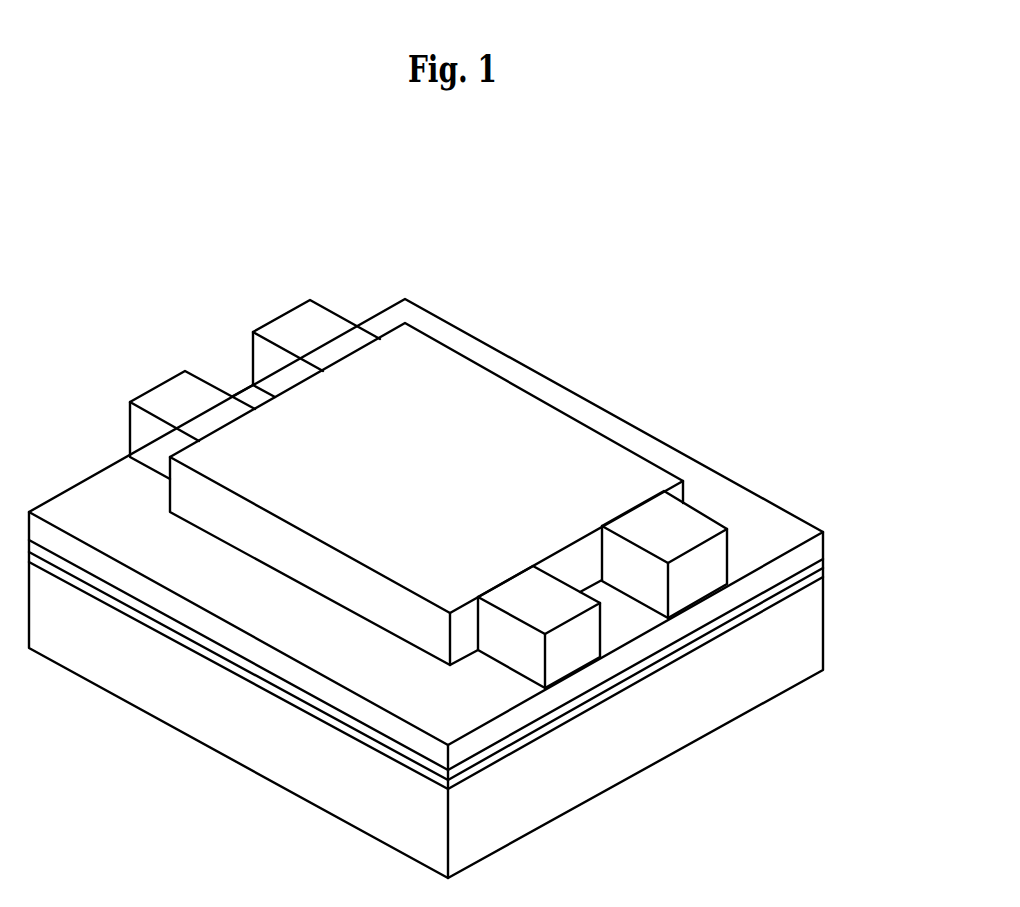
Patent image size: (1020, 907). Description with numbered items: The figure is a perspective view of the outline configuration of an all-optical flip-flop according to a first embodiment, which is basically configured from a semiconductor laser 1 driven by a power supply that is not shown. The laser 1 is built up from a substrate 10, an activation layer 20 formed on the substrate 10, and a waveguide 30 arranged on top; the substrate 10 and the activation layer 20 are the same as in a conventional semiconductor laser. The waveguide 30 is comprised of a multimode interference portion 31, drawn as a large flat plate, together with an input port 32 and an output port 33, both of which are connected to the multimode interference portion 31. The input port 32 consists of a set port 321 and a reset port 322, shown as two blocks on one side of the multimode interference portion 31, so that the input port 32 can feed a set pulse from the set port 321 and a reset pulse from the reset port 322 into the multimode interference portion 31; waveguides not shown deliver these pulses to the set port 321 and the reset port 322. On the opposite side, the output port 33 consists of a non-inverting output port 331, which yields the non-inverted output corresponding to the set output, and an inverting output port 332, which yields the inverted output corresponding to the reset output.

The semiconductor laser 1 is at (625, 319).
The substrate 10 is at (815, 640).
The activation layer 20 is at (825, 565).
The waveguide 30 is at (655, 454).
The multimode interference portion 31 is at (415, 347).
The input port 32 is at (220, 225).
The set port 321 is at (280, 322).
The reset port 322 is at (167, 390).
The output port 33 is at (790, 770).
The non-inverting output port 331 is at (575, 650).
The inverting output port 332 is at (690, 585).